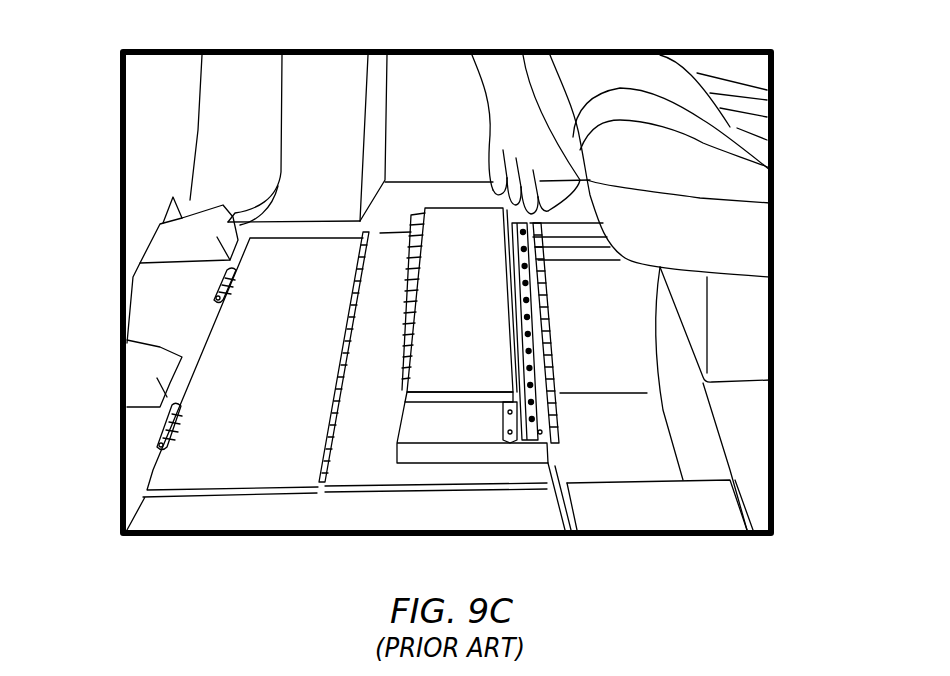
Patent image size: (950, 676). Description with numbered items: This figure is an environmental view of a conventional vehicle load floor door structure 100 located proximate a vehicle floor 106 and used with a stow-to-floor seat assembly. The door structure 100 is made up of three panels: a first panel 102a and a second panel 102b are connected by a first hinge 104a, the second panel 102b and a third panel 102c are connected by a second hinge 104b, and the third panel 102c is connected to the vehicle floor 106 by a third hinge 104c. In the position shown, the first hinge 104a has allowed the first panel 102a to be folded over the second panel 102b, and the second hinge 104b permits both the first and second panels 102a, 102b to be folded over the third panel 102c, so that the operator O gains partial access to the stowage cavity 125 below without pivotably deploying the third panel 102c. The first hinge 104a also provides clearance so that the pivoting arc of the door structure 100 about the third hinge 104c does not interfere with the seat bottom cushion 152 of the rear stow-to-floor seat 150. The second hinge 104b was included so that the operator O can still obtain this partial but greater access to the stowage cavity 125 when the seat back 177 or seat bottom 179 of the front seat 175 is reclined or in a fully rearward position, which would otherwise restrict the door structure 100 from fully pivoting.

The front seat 175 is at (192, 80).
The seat back 177 is at (148, 125).
The seat bottom 179 is at (137, 222).
The third hinge 104c is at (148, 430).
The third panel 102c is at (273, 384).
The second panel 102b is at (380, 384).
The second hinge 104b is at (320, 437).
The first hinge 104a is at (551, 301).
The door structure 100 is at (448, 170).
The operator O is at (474, 62).
The rear stow-to-floor seat 150 is at (678, 86).
The seat bottom cushion 152 is at (740, 227).
The stowage cavity 125 is at (640, 436).
The vehicle floor 106 is at (303, 520).
The first panel 102a is at (452, 440).